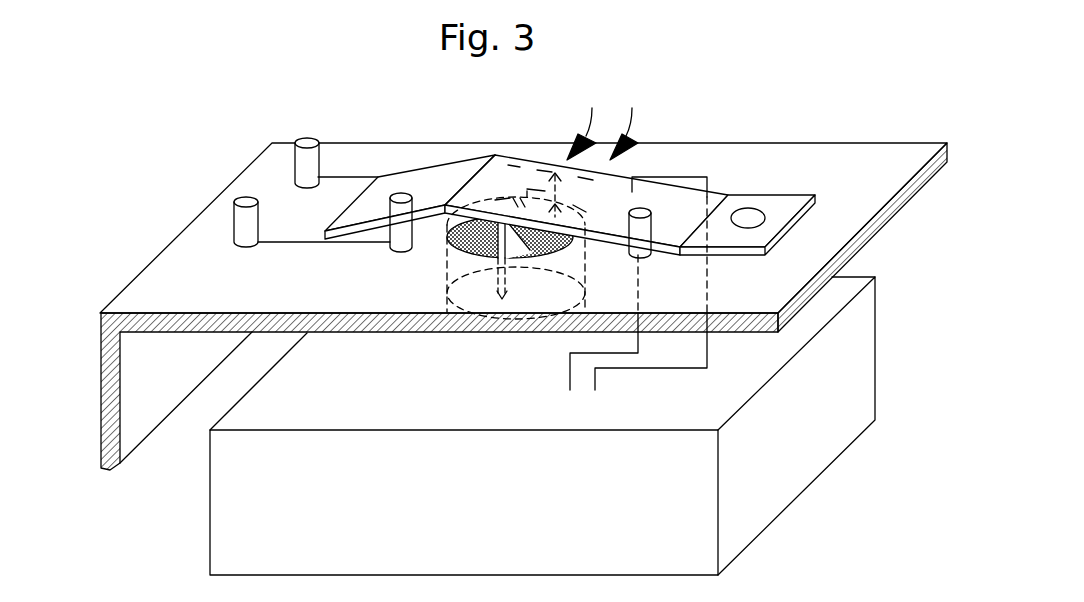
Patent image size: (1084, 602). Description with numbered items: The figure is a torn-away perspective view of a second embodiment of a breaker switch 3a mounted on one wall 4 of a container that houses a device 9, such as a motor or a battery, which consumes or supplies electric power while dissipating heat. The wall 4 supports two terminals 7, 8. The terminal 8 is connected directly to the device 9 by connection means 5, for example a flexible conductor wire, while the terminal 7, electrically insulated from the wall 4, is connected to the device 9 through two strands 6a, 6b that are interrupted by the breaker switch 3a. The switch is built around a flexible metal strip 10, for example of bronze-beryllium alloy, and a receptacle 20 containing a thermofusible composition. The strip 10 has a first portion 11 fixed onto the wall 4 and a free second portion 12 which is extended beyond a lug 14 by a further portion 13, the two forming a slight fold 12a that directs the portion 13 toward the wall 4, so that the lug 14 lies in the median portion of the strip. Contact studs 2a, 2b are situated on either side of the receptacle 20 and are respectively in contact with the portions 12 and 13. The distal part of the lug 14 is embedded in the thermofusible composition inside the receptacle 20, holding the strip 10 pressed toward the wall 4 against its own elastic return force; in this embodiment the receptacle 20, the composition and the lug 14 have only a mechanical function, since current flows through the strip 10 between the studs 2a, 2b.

The wall 4 is at (187, 270).
The connection means 5 is at (355, 175).
The terminal 7 is at (245, 200).
The terminal 8 is at (306, 140).
The portion 13 is at (425, 177).
The fold 12a is at (468, 160).
The flexible metal strip 10 is at (587, 120).
The breaker switch 3a is at (628, 120).
The second portion 12 is at (632, 192).
The first portion 11 is at (770, 207).
The strand 6a is at (270, 243).
The contact stud 2b is at (397, 237).
The lug 14 is at (455, 248).
The contact stud 2a is at (647, 250).
The receptacle 20 is at (458, 315).
The strand 6b is at (570, 377).
The device 9 is at (793, 433).